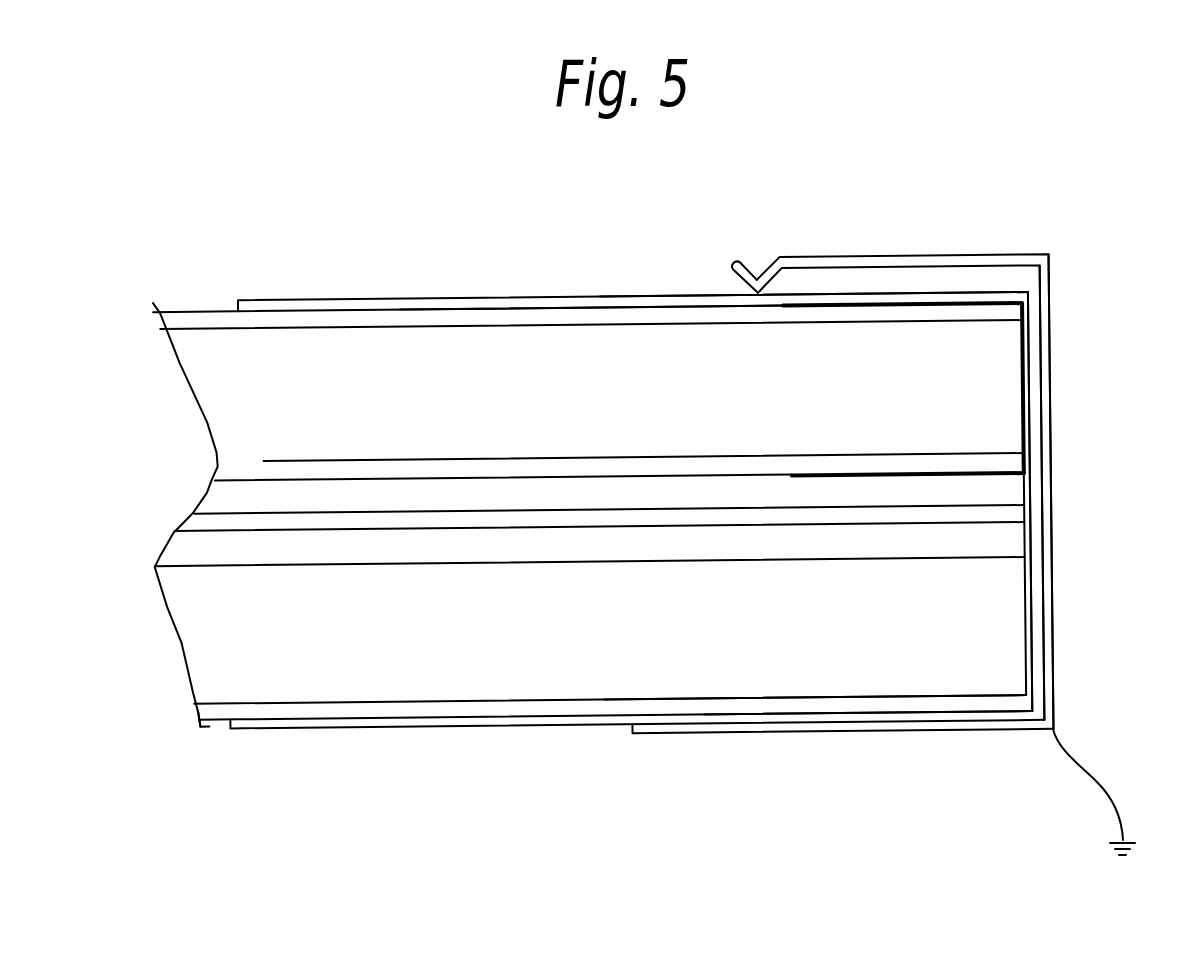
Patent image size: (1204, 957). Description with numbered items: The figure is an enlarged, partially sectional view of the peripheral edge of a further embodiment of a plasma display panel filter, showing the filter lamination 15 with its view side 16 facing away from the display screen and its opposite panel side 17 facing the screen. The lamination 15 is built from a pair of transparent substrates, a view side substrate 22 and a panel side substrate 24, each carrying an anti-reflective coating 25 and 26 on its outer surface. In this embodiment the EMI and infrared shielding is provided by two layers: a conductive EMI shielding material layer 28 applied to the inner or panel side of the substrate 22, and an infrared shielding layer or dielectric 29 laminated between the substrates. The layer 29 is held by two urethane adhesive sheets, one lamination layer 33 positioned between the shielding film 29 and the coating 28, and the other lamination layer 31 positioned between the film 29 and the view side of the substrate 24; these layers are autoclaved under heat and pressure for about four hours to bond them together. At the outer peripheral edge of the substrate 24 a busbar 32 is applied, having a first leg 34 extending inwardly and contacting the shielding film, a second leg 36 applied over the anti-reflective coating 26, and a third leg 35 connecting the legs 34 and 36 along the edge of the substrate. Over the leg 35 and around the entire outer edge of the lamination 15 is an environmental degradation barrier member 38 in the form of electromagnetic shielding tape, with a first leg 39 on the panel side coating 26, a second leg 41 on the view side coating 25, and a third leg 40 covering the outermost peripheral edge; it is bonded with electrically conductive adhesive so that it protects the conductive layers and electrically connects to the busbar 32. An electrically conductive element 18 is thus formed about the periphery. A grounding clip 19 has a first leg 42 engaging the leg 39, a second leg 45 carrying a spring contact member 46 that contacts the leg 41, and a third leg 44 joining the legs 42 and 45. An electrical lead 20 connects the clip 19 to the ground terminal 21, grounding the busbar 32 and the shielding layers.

The filter lamination 15 is at (900, 607).
The view side 16 is at (200, 310).
The panel side 17 is at (213, 737).
The electrically conductive element 18 is at (540, 290).
The grounding clip 19 is at (1060, 425).
The electrical lead 20 is at (1100, 782).
The ground terminal 21 is at (1125, 843).
The view side substrate 22 is at (257, 362).
The panel side substrate 24 is at (445, 665).
The anti-reflective coating 25 is at (432, 318).
The anti-reflective coating 26 is at (578, 712).
The conductive EMI shielding material layer 28 is at (258, 464).
The infrared shielding layer 29 is at (265, 522).
The adhesive lamination layer 31 is at (175, 546).
The busbar 32 is at (1033, 390).
The adhesive lamination layer 33 is at (216, 497).
The first leg of busbar 34 is at (968, 476).
The third leg of busbar 35 is at (1028, 348).
The second leg of busbar 36 is at (1000, 300).
The environmental degradation barrier member 38 is at (1038, 666).
The first leg of barrier member 39 is at (958, 717).
The third leg of barrier member 40 is at (1023, 488).
The second leg of barrier member 41 is at (672, 293).
The first leg of grounding clip 42 is at (832, 735).
The third leg of grounding clip 44 is at (1057, 583).
The second leg of grounding clip 45 is at (828, 256).
The spring contact member 46 is at (752, 262).